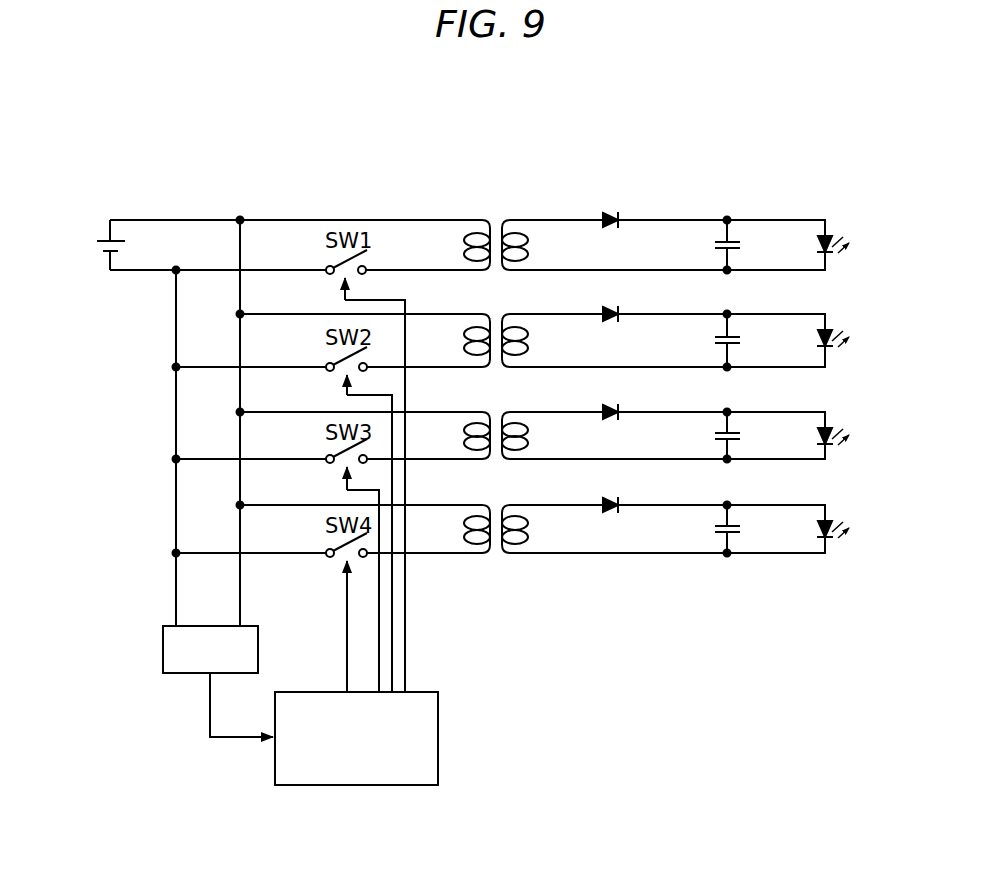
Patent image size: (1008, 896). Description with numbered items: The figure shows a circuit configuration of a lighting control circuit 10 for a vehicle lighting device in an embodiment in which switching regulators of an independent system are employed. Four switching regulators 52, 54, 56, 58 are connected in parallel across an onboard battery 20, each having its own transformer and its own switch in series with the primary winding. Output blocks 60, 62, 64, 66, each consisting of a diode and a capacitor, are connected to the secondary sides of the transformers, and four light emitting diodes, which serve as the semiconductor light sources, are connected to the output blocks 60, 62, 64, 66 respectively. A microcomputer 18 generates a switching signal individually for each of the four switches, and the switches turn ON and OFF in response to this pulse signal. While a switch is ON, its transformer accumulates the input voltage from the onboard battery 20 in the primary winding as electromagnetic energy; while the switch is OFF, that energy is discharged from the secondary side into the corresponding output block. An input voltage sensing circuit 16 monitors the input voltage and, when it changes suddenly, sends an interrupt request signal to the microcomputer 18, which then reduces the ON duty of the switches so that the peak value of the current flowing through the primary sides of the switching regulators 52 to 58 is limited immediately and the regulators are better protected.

The lighting control circuit 10 is at (569, 173).
The input voltage sensing circuit 16 is at (163, 642).
The microcomputer 18 is at (397, 785).
The onboard battery 20 is at (107, 237).
The switching regulator 52 is at (251, 197).
The switching regulator 54 is at (160, 343).
The switching regulator 56 is at (160, 445).
The switching regulator 58 is at (160, 545).
The output block 60 is at (789, 203).
The output block 62 is at (789, 298).
The output block 64 is at (789, 395).
The output block 66 is at (789, 488).